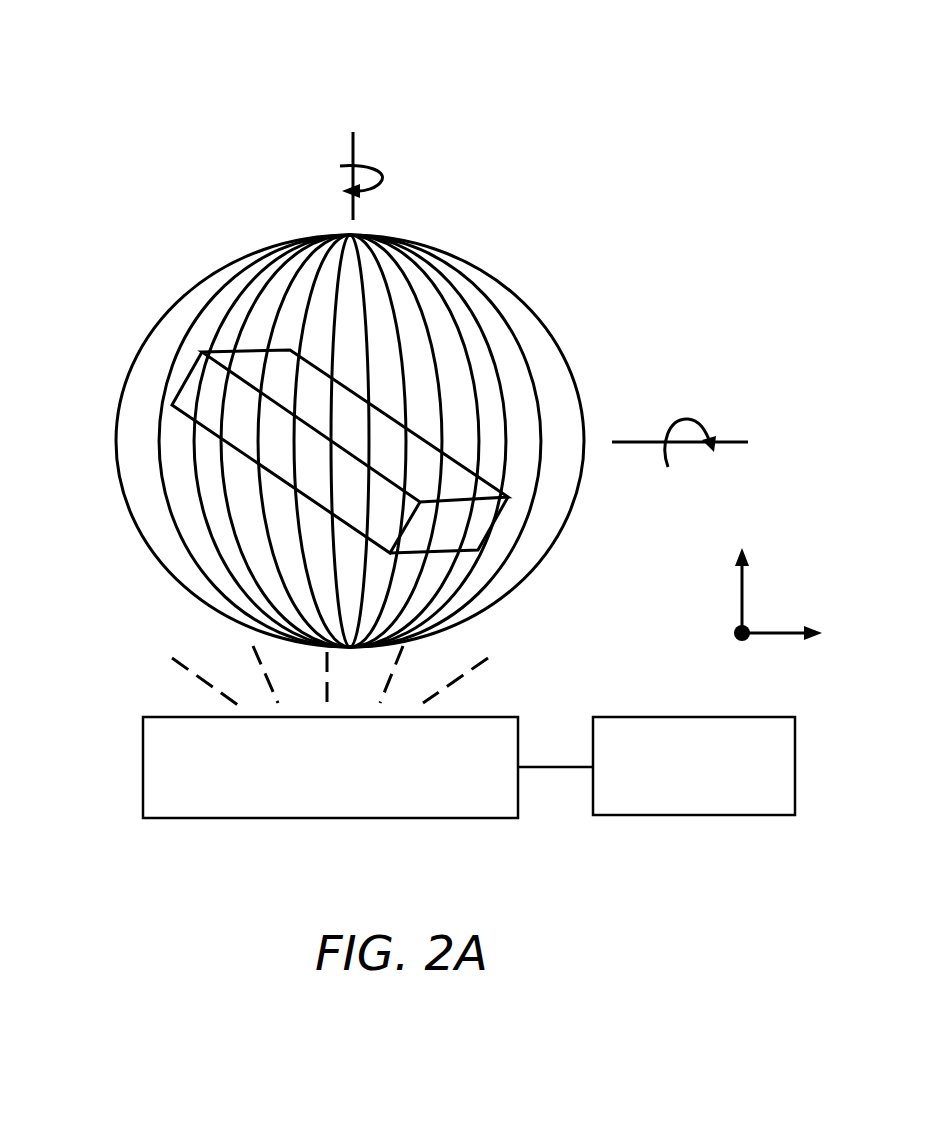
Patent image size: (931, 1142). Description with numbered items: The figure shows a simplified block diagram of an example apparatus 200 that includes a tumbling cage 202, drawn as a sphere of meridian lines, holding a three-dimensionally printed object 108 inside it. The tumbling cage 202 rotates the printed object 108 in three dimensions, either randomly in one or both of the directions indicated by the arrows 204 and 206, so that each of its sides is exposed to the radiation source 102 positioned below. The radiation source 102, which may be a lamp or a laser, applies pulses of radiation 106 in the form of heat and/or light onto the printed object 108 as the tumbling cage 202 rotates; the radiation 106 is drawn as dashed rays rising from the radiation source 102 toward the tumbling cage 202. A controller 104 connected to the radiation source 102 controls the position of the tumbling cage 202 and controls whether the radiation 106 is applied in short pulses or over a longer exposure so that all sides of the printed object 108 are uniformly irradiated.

The apparatus 200 is at (393, 60).
The tumbling cage 202 is at (500, 283).
The arrow 204 is at (700, 425).
The arrow 206 is at (385, 180).
The 3D printed object 108 is at (178, 385).
The radiation 106 is at (178, 643).
The radiation source 102 is at (351, 791).
The controller 104 is at (674, 791).